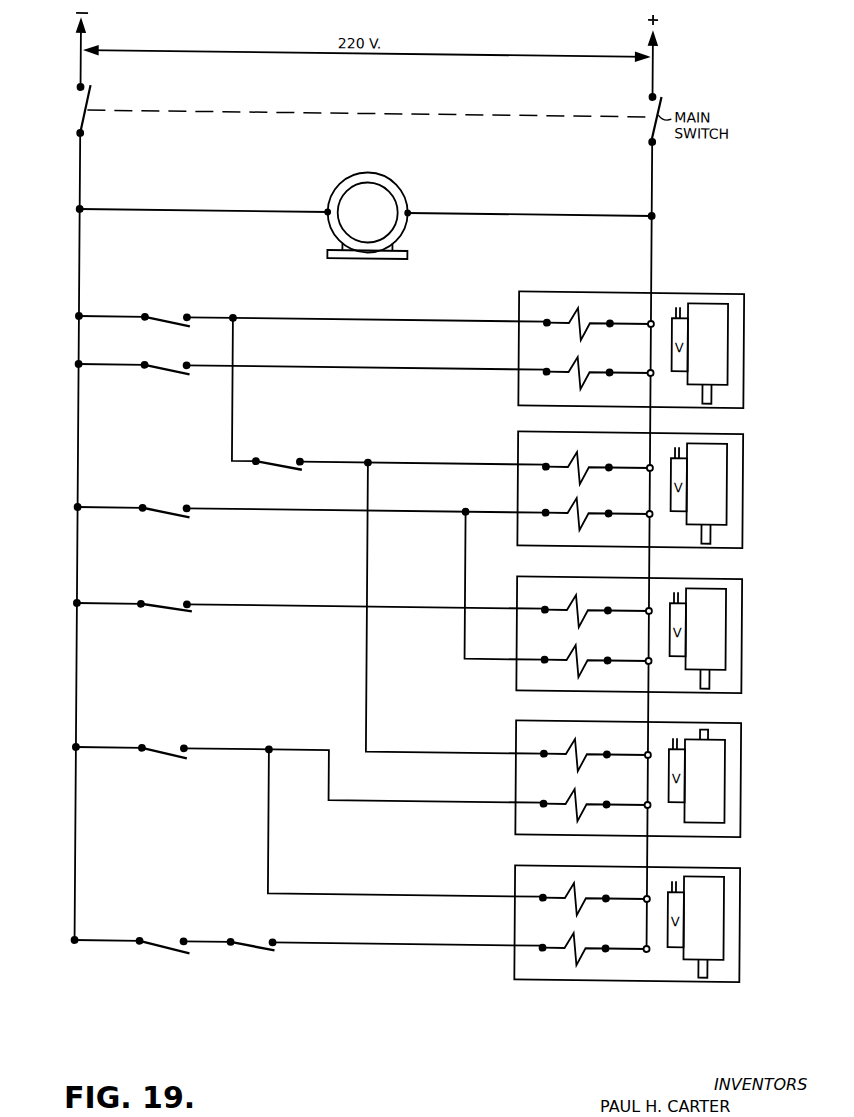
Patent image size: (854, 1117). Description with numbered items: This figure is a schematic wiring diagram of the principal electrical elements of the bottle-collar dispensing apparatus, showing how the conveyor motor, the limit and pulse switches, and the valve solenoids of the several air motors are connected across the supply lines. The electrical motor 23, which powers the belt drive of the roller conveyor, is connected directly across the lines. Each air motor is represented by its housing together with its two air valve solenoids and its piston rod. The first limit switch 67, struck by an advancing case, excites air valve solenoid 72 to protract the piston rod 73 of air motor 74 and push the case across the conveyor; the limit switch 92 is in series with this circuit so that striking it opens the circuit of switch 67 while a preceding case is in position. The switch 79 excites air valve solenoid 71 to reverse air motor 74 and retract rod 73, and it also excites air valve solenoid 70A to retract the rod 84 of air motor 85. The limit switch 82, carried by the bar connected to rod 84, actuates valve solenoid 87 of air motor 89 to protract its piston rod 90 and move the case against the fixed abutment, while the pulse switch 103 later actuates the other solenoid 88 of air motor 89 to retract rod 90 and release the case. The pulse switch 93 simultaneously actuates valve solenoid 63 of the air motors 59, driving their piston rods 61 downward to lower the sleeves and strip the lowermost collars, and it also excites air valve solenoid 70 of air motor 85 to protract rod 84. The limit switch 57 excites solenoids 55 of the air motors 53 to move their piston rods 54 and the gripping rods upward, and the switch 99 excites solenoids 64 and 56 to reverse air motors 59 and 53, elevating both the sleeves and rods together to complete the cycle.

The electrical motor 23 is at (381, 214).
The limit switch 82 is at (160, 318).
The pulse switch 103 is at (160, 370).
The pulse switch 93 is at (277, 460).
The switch 99 is at (170, 512).
The limit switch 57 is at (164, 605).
The switch 79 is at (170, 752).
The limit switch 67 is at (168, 948).
The limit switch 92 is at (252, 947).
The valve solenoid 87 is at (581, 308).
The relay contact 88 is at (587, 369).
The air motor 89 is at (746, 332).
The piston rod 90 is at (714, 390).
The valve solenoid 63 is at (583, 453).
The valve solenoid 64 is at (589, 512).
The air motor 59 is at (746, 472).
The piston rod 61 is at (714, 530).
The solenoid 55 is at (584, 595).
The solenoid 56 is at (584, 645).
The air motor 53 is at (746, 623).
The piston rod 54 is at (714, 675).
The air valve solenoid 70 is at (585, 740).
The air valve solenoid 70A is at (585, 790).
The rod 84 is at (713, 727).
The air motor 85 is at (746, 788).
The air valve solenoid 71 is at (577, 886).
The air valve solenoid 72 is at (579, 947).
The piston rod 73 is at (717, 968).
The air motor 74 is at (747, 903).